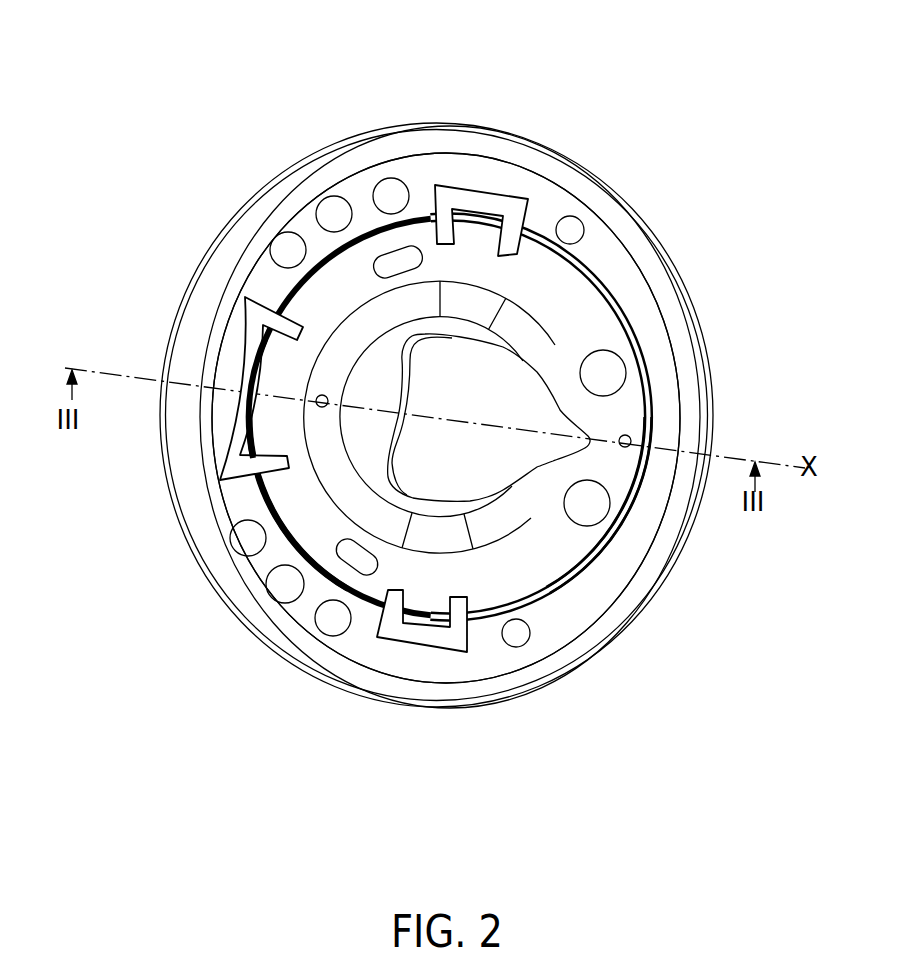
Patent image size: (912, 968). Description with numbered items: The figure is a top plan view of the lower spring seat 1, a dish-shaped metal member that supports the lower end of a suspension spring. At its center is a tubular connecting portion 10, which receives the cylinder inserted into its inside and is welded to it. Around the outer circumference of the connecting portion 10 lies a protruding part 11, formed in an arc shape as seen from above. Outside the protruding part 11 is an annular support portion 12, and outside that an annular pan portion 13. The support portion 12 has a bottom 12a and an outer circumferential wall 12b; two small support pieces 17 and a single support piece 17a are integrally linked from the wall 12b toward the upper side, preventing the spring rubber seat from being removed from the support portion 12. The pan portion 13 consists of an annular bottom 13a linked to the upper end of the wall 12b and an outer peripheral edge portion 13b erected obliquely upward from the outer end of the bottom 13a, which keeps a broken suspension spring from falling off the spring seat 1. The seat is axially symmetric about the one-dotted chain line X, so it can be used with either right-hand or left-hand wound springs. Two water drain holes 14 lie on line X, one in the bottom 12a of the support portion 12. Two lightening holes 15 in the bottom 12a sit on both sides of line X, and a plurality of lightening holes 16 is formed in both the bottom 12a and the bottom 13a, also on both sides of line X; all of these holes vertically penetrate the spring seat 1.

The lower spring seat 1 is at (666, 191).
The connecting portion 10 is at (414, 430).
The protruding part 11 is at (305, 478).
The support portion 12 is at (326, 257).
The bottom of the support portion 12a is at (307, 527).
The outer circumferential wall 12b is at (586, 570).
The pan portion 13 is at (676, 302).
The annular bottom 13a is at (622, 265).
The outer peripheral edge portion 13b is at (622, 582).
The water drain hole 14 is at (316, 404).
The lightening hole 15 is at (404, 250).
The lightening hole 16 is at (332, 195).
The support piece 17 is at (482, 208).
The support piece 17a is at (243, 348).